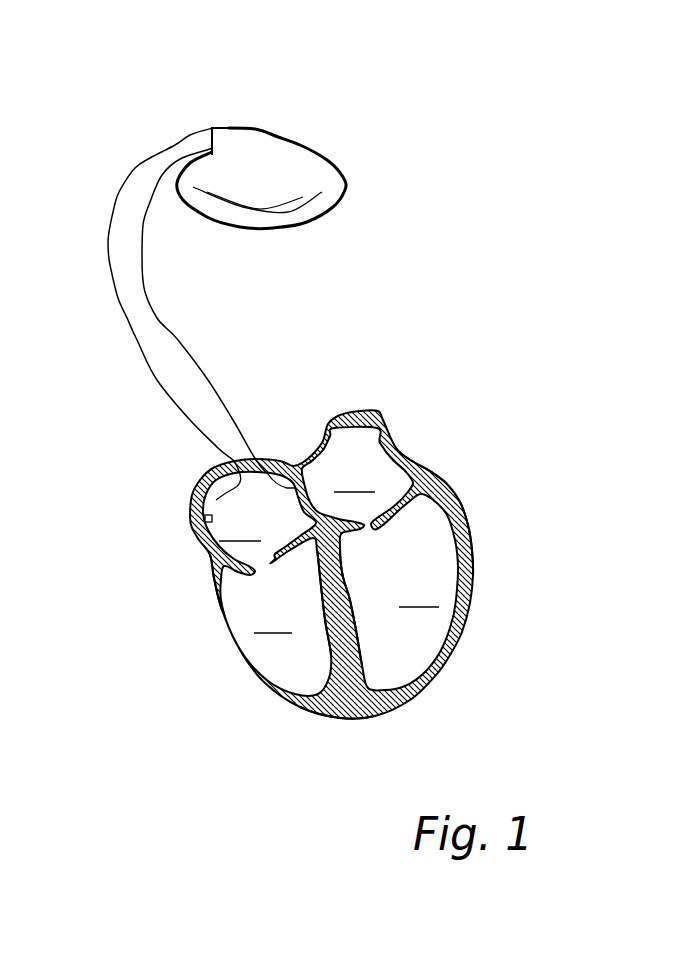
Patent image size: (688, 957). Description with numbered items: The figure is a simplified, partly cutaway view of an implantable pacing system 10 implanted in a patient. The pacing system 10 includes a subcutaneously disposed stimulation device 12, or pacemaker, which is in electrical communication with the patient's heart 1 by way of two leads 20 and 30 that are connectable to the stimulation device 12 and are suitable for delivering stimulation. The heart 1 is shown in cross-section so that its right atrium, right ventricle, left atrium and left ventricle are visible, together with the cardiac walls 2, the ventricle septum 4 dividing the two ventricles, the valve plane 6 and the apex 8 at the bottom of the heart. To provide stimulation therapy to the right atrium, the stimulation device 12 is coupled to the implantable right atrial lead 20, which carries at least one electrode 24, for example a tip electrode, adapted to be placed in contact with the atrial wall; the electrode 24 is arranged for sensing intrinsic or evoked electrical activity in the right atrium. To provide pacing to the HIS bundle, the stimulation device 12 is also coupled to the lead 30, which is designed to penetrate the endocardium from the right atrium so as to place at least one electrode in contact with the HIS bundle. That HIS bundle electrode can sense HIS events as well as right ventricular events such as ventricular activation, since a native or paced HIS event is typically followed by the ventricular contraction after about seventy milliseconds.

The heart 1 is at (176, 507).
The cardiac walls 2 is at (217, 613).
The ventricle septum 4 is at (342, 629).
The valve plane 6 is at (416, 480).
The apex 8 is at (350, 710).
The implantable pacing system 10 is at (308, 119).
The stimulation device 12 is at (318, 167).
The right atrial lead 20 is at (137, 345).
The electrode 24 is at (200, 543).
The lead 30 is at (185, 336).